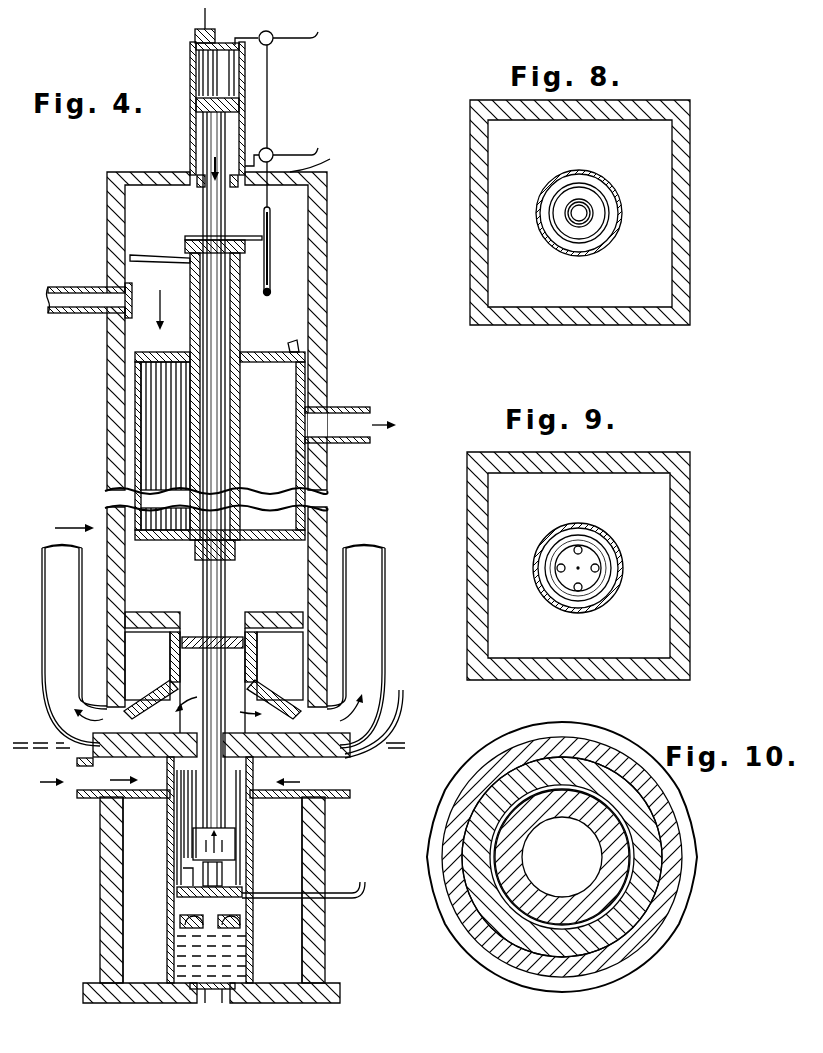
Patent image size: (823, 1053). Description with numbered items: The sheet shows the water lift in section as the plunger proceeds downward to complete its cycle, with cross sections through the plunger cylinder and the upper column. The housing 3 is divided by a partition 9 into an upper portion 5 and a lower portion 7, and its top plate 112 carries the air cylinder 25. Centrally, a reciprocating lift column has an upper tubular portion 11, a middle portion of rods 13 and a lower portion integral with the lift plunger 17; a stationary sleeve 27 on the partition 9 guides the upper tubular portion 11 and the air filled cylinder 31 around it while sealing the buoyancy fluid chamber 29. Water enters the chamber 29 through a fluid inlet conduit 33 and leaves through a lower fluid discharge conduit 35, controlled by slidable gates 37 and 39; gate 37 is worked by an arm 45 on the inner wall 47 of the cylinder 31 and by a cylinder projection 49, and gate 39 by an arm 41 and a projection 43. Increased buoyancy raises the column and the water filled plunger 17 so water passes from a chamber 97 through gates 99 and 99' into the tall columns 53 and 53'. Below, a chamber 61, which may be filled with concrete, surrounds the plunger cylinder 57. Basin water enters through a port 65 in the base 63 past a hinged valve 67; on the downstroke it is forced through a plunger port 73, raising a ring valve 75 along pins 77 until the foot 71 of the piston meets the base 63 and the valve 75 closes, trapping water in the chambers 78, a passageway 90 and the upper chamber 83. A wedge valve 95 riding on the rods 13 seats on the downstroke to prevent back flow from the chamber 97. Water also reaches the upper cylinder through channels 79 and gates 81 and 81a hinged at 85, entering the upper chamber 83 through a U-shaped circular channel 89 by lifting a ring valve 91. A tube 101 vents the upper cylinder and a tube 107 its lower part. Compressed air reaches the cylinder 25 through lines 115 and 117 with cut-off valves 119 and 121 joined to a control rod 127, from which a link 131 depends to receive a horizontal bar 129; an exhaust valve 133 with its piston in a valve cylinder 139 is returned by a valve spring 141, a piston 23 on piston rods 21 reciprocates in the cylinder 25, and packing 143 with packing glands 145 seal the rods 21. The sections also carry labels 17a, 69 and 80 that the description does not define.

In FIG. 4, the housing 3 is at (337, 489).
In FIG. 4, the upper portion 5 is at (65, 527).
In FIG. 4, the lower portion 7 is at (162, 781).
In FIG. 4, the partition 9 is at (268, 612).
In FIG. 10, the upper tubular portion 11 is at (600, 907).
In FIG. 4, the rods 13 is at (232, 662).
In FIG. 4, the lift plunger 17 is at (176, 857).
In FIG. 8, the lift plunger 17 is at (607, 186).
In FIG. 9, the lift plunger 17 is at (580, 609).
In FIG. 8, the tube end 17a is at (603, 219).
In FIG. 4, the piston rods 21 is at (201, 217).
In FIG. 4, the piston 23 is at (197, 105).
In FIG. 4, the air cylinder 25 is at (190, 77).
In FIG. 10, the stationary sleeve 27 is at (633, 895).
In FIG. 4, the buoyancy fluid chamber 29 is at (290, 556).
In FIG. 4, the air filled cylinder 31 is at (140, 434).
In FIG. 10, the air filled cylinder 31 is at (692, 820).
In FIG. 4, the fluid inlet conduit 33 is at (75, 287).
In FIG. 4, the fluid discharge conduit 35 is at (348, 407).
In FIG. 4, the slidable gate 37 is at (124, 317).
In FIG. 4, the slidable gate 39 is at (305, 367).
In FIG. 4, the arm 41 is at (291, 341).
In FIG. 4, the projection 43 is at (298, 456).
In FIG. 4, the arm 45 is at (153, 256).
In FIG. 4, the inner wall 47 is at (191, 282).
In FIG. 10, the inner wall 47 is at (672, 866).
In FIG. 4, the cylinder projection 49 is at (138, 358).
In FIG. 4, the column 53 is at (59, 646).
In FIG. 4, the column 53' is at (377, 647).
In FIG. 4, the plunger cylinder 57 is at (168, 945).
In FIG. 8, the plunger cylinder 57 is at (589, 173).
In FIG. 9, the plunger cylinder 57 is at (560, 605).
In FIG. 4, the chamber 61 is at (290, 963).
In FIG. 8, the chamber 61 is at (503, 162).
In FIG. 9, the chamber 61 is at (500, 497).
In FIG. 4, the base 63 is at (285, 1003).
In FIG. 4, the port 65 is at (208, 1004).
In FIG. 4, the hinged valve 67 is at (221, 1004).
In FIG. 4, the valve seat 69 is at (240, 922).
In FIG. 4, the foot 71 is at (180, 923).
In FIG. 4, the plunger port 73 is at (211, 938).
In FIG. 4, the ring valve 75 is at (183, 895).
In FIG. 9, the ring valve 75 is at (596, 578).
In FIG. 4, the pins 77 is at (243, 908).
In FIG. 9, the pins 77 is at (583, 549).
In FIG. 9, the chambers 78 is at (594, 591).
In FIG. 4, the channel 79 is at (77, 790).
In FIG. 8, the central bore 80 is at (572, 219).
In FIG. 4, the gate 81 is at (148, 800).
In FIG. 4, the gate 81a is at (280, 800).
In FIG. 4, the upper chamber 83 is at (188, 838).
In FIG. 8, the upper chamber 83 is at (592, 231).
In FIG. 4, the hinge 85 is at (93, 765).
In FIG. 4, the U-shaped circular channel 89 is at (245, 837).
In FIG. 8, the U-shaped circular channel 89 is at (613, 212).
In FIG. 4, the passageway 90 is at (232, 879).
In FIG. 4, the ring valve 91 is at (183, 879).
In FIG. 4, the wedge valve 95 is at (190, 636).
In FIG. 4, the chamber 97 is at (244, 681).
In FIG. 4, the gate 99 is at (160, 706).
In FIG. 4, the gate 99' is at (273, 708).
In FIG. 4, the tube 101 is at (406, 694).
In FIG. 4, the tube 107 is at (310, 879).
In FIG. 4, the plate 112 is at (326, 157).
In FIG. 4, the line 115 is at (311, 153).
In FIG. 4, the line 117 is at (319, 35).
In FIG. 4, the cut-off valve 119 is at (270, 148).
In FIG. 4, the cut-off valve 121 is at (273, 35).
In FIG. 4, the control rod 127 is at (268, 90).
In FIG. 4, the horizontal bar 129 is at (242, 237).
In FIG. 4, the link 131 is at (272, 240).
In FIG. 4, the exhaust valve 133 is at (207, 180).
In FIG. 4, the valve cylinder 139 is at (196, 45).
In FIG. 4, the valve spring 141 is at (213, 32).
In FIG. 4, the packing 143 is at (196, 185).
In FIG. 4, the packing gland 145 is at (201, 196).